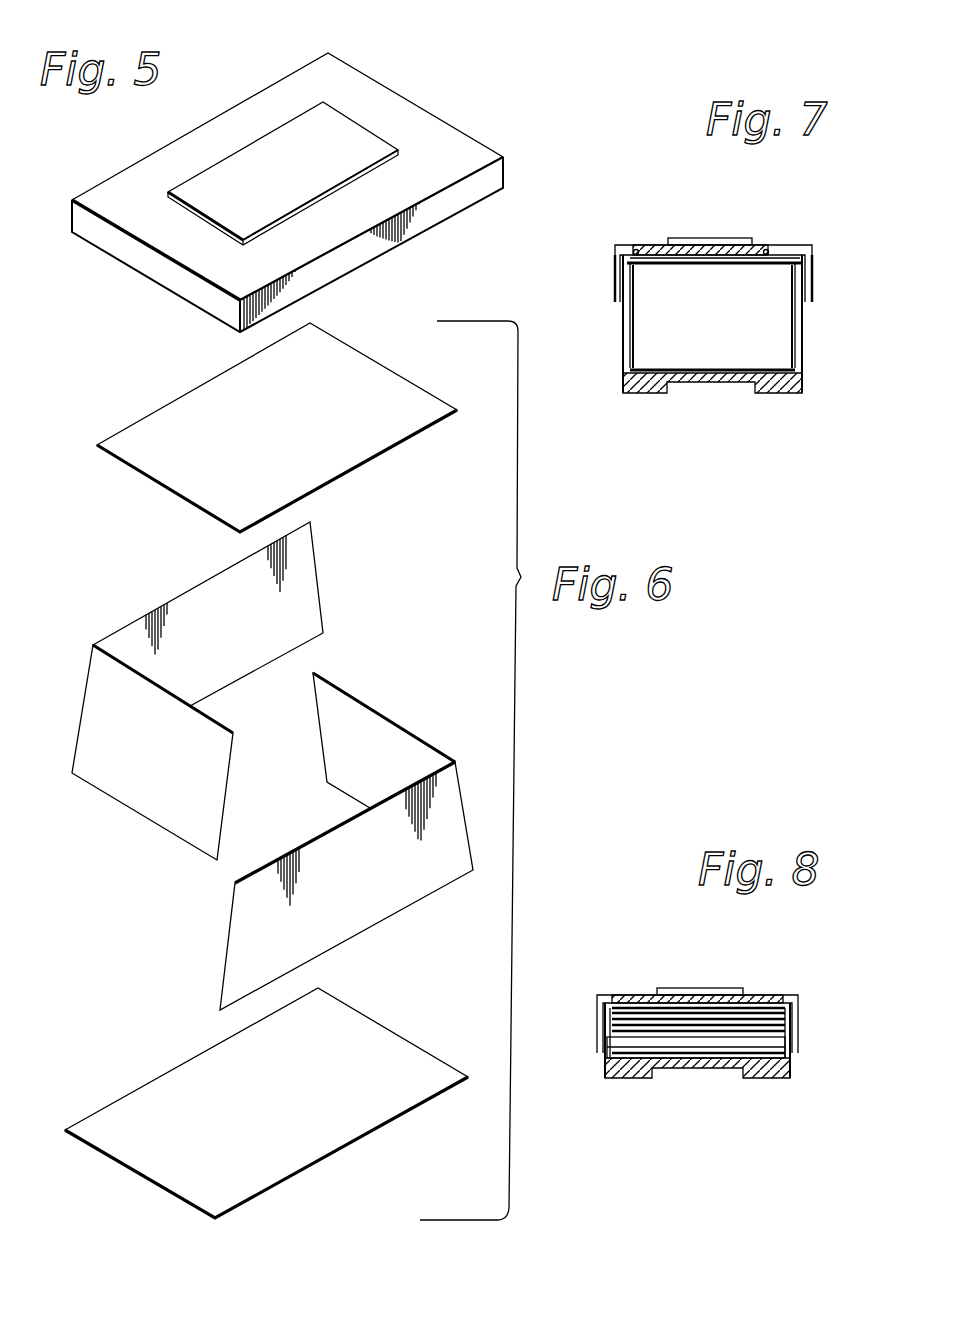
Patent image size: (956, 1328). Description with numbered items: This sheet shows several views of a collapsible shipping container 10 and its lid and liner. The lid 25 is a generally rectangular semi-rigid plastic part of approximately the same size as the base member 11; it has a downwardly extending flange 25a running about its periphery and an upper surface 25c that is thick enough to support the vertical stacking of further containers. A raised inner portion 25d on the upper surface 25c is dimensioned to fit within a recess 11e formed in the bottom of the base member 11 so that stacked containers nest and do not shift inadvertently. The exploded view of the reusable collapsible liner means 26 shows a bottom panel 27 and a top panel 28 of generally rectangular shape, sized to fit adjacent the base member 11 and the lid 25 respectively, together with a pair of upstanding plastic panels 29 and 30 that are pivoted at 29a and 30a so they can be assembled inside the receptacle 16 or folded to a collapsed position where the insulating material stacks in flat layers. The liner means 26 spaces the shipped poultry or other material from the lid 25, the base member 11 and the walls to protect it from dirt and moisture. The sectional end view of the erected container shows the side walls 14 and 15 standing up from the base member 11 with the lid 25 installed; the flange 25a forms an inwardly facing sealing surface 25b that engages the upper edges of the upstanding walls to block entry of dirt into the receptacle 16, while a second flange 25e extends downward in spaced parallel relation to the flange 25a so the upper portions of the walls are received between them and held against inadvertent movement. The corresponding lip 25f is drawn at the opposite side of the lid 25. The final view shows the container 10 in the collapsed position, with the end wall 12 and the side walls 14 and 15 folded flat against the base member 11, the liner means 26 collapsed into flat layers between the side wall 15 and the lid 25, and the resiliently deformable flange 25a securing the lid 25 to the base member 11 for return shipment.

In FIG. 7, the collapsible shipping container 10 is at (768, 198).
In FIG. 8, the collapsible shipping container 10 is at (813, 1007).
In FIG. 7, the base member 11 is at (713, 352).
In FIG. 8, the base member 11 is at (697, 1066).
In FIG. 7, the recess 11e is at (683, 385).
In FIG. 8, the end wall 12 is at (730, 1063).
In FIG. 7, the side wall 14 is at (803, 333).
In FIG. 8, the side wall 14 is at (765, 1077).
In FIG. 7, the side wall 15 is at (620, 337).
In FIG. 8, the side wall 15 is at (642, 1075).
In FIG. 7, the receptacle 16 is at (720, 344).
In FIG. 5, the lid 25 is at (287, 172).
In FIG. 7, the lid 25 is at (711, 234).
In FIG. 8, the lid 25 is at (668, 995).
In FIG. 5, the flange 25a is at (423, 225).
In FIG. 7, the flange 25a is at (813, 277).
In FIG. 7, the sealing surface 25b is at (617, 277).
In FIG. 5, the upper surface 25c is at (175, 153).
In FIG. 7, the upper surface 25c is at (645, 253).
In FIG. 5, the raised inner portion 25d is at (337, 128).
In FIG. 7, the raised inner portion 25d is at (717, 237).
In FIG. 7, the flange 25e is at (777, 245).
In FIG. 7, the cover left lip 25f is at (643, 252).
In FIG. 6, the liner means 26 is at (117, 868).
In FIG. 6, the bottom panel 27 is at (133, 1110).
In FIG. 7, the bottom panel 27 is at (742, 368).
In FIG. 8, the bottom panel 27 is at (678, 1013).
In FIG. 6, the top panel 28 is at (140, 457).
In FIG. 7, the top panel 28 is at (683, 267).
In FIG. 8, the top panel 28 is at (635, 1008).
In FIG. 6, the upstanding plastic panel 29 is at (169, 691).
In FIG. 7, the upstanding plastic panel 29 is at (632, 317).
In FIG. 8, the upstanding plastic panel 29 is at (708, 1017).
In FIG. 6, the pivot 29a is at (82, 687).
In FIG. 6, the upstanding plastic panel 30 is at (349, 830).
In FIG. 7, the upstanding plastic panel 30 is at (790, 315).
In FIG. 8, the upstanding plastic panel 30 is at (753, 1030).
In FIG. 6, the pivot 30a is at (460, 773).